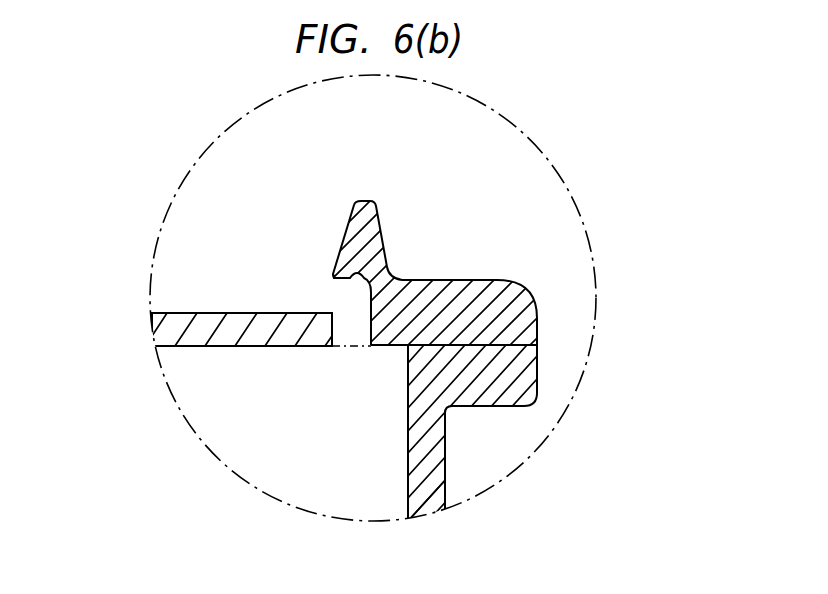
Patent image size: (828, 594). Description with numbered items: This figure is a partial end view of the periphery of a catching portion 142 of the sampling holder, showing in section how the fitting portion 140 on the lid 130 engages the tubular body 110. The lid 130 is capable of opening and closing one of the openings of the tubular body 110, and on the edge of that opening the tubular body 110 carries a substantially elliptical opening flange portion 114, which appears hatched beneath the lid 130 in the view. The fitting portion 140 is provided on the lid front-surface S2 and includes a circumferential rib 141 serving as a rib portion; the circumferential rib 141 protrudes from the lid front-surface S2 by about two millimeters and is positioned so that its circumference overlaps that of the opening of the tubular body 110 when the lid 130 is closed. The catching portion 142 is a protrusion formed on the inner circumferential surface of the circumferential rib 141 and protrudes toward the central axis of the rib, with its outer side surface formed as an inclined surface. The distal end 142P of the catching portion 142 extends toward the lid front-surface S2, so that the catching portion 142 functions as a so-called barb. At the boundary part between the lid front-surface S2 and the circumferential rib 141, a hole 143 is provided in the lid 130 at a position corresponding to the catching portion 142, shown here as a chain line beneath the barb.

The lid front-surface S2 is at (197, 313).
The tubular body 110 is at (443, 493).
The opening flange portion 114 is at (527, 386).
The lid 130 is at (518, 302).
The fitting portion 140 is at (336, 197).
The circumferential rib 141 is at (391, 272).
The catching portion 142 is at (337, 274).
The distal end 142P is at (338, 279).
The hole 143 is at (346, 352).